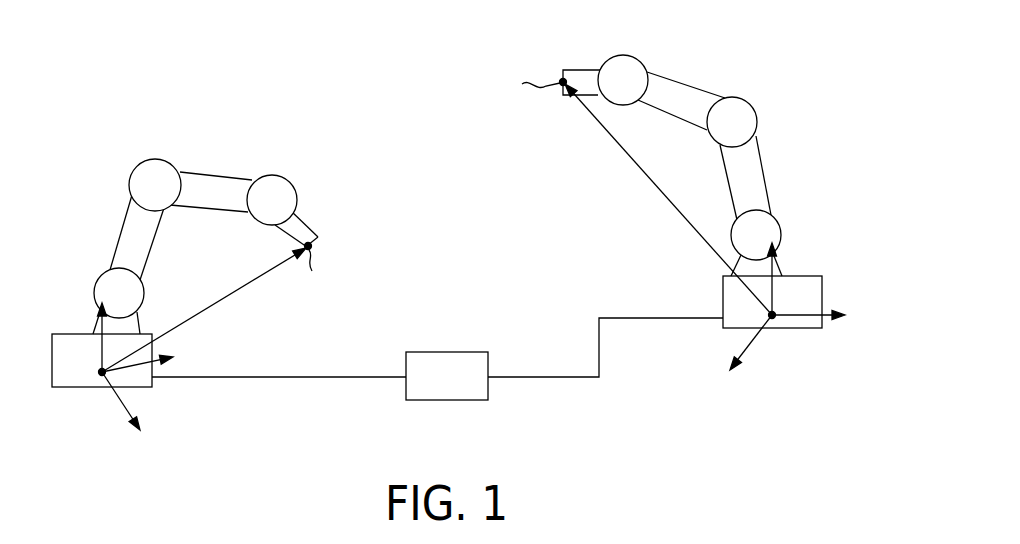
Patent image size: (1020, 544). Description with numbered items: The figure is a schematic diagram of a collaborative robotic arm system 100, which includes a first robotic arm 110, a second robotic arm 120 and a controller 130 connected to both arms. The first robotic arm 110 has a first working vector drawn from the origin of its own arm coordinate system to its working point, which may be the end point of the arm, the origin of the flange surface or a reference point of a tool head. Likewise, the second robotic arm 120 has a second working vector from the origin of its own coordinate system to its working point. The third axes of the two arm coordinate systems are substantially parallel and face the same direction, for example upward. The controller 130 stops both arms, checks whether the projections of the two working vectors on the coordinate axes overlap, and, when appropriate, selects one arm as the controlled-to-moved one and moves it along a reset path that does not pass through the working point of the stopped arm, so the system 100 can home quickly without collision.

The collaborative robotic arm system 100 is at (220, 62).
The first robotic arm 110 is at (128, 247).
The second robotic arm 120 is at (680, 100).
The controller 130 is at (467, 388).